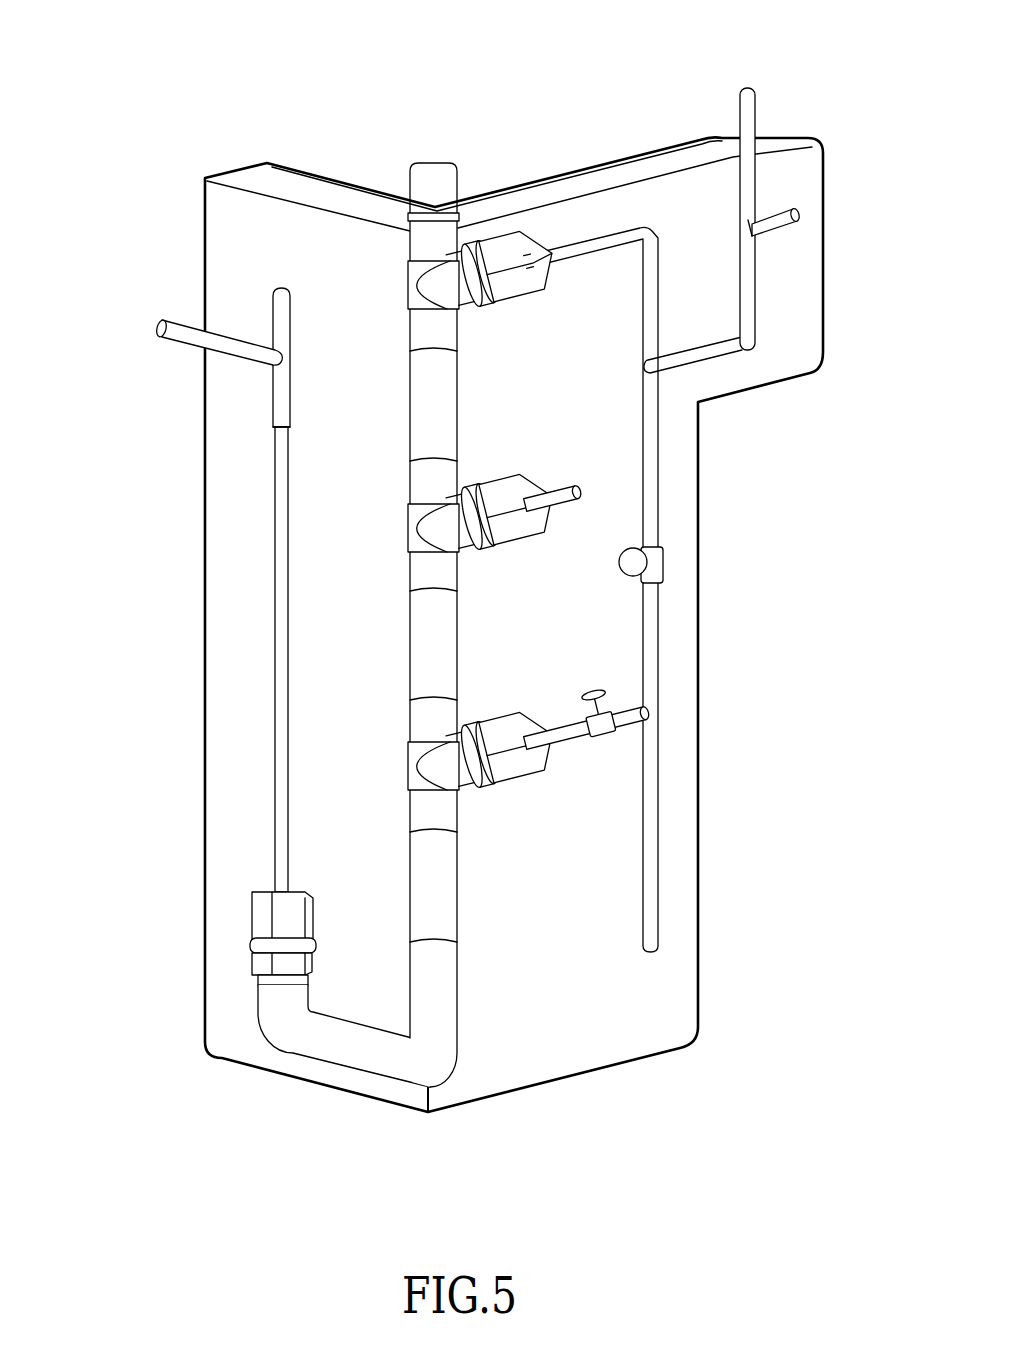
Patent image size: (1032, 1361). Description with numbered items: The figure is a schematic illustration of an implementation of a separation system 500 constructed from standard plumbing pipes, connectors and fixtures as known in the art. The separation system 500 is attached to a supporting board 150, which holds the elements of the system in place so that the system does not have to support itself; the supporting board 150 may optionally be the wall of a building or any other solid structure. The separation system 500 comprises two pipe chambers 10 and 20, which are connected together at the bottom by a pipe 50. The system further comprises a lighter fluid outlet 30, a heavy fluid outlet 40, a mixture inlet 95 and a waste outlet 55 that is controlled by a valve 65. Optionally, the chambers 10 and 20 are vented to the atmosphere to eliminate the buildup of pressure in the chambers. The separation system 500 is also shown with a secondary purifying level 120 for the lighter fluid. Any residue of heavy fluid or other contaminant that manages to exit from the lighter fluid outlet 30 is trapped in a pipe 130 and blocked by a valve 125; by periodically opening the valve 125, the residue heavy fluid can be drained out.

The separation system 500 is at (103, 98).
The pipe chamber 10 is at (450, 660).
The pipe chamber 20 is at (280, 605).
The lighter fluid outlet 30 is at (517, 290).
The heavy fluid outlet 40 is at (185, 335).
The pipe 50 is at (357, 1060).
The waste outlet 55 is at (515, 770).
The valve 65 is at (598, 700).
The mixture inlet 95 is at (557, 490).
The secondary purifying level 120 is at (748, 288).
The valve 125 is at (660, 567).
The pipe 130 is at (657, 510).
The supporting board 150 is at (818, 370).